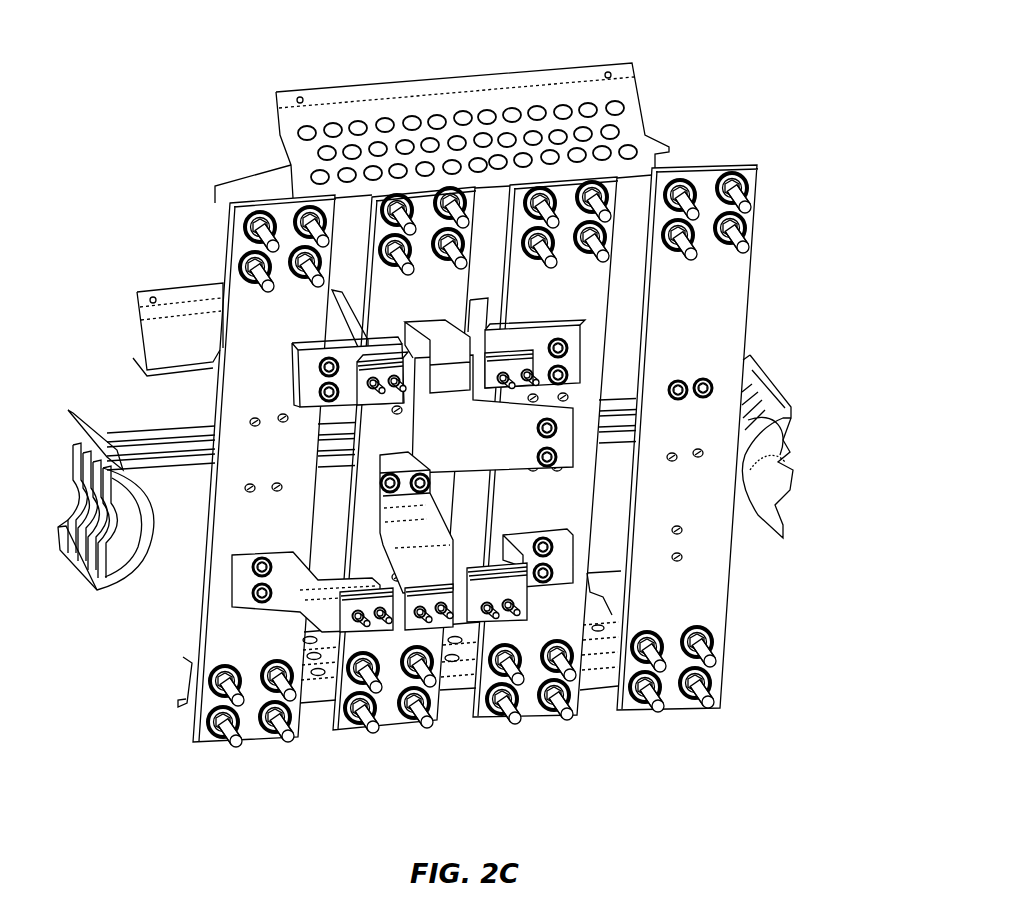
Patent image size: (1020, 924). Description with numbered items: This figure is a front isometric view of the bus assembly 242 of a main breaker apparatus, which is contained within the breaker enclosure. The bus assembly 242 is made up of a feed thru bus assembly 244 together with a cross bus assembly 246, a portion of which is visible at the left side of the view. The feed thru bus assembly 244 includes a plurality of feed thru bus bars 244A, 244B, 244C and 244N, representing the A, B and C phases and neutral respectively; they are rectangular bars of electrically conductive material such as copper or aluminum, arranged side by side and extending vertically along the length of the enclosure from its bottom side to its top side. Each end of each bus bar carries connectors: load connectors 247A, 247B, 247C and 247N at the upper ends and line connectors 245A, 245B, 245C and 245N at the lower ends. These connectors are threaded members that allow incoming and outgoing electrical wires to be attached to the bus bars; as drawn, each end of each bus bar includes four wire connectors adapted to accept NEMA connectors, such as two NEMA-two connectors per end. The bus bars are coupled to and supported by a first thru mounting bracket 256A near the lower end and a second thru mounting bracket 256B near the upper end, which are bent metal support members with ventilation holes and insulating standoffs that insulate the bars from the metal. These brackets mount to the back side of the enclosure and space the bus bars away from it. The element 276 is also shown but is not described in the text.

The bus assembly 242 is at (442, 424).
The feed thru bus assembly 244 is at (483, 426).
The feed thru bus bar 244A is at (292, 462).
The feed thru bus bar 244B is at (308, 425).
The feed thru bus bar 244C is at (618, 405).
The feed thru bus bar 244N is at (721, 451).
The load connector 247A is at (266, 212).
The load connector 247B is at (392, 228).
The load connector 247C is at (512, 192).
The load connector 247N is at (742, 195).
The line connector 245A is at (231, 754).
The line connector 245B is at (367, 738).
The line connector 245C is at (575, 733).
The line connector 245N is at (694, 720).
The first thru mounting bracket 256A is at (612, 598).
The second thru mounting bracket 256B is at (568, 62).
The cross bus assembly 246 is at (153, 568).
The right connector 276 is at (717, 384).